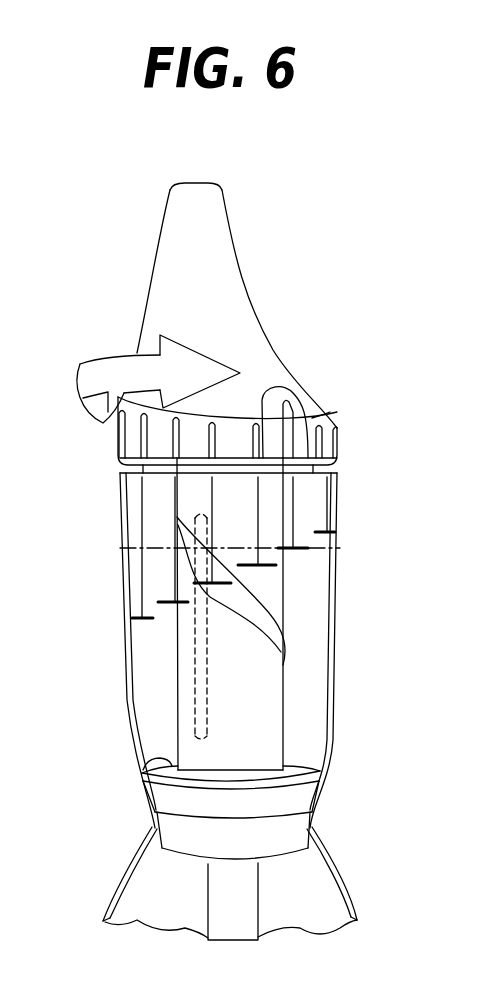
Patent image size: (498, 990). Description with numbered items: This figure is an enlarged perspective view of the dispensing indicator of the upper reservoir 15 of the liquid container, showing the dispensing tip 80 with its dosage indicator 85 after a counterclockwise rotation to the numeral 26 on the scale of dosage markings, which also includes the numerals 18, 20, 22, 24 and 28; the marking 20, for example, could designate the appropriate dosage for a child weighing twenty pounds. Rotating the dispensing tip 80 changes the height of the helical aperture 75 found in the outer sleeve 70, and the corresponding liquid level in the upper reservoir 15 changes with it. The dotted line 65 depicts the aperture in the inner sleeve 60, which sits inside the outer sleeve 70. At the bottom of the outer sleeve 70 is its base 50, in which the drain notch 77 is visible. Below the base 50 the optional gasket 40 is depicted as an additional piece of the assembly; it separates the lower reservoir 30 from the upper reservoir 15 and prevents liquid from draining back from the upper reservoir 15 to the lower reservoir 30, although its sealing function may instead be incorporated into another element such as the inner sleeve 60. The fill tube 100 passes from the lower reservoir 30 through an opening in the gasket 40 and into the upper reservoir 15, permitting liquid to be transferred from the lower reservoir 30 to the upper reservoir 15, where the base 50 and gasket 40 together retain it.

The upper reservoir 15 is at (340, 568).
The dose graduation 18 is at (143, 569).
The numeral 20 is at (173, 561).
The dose graduation 22 is at (212, 551).
The dose graduation 24 is at (257, 545).
The numeral 26 is at (294, 536).
The dose graduation 28 is at (327, 527).
The lower reservoir 30 is at (115, 882).
The gasket 40 is at (303, 798).
The base of the outer sleeve 50 is at (320, 775).
The inner sleeve 60 is at (255, 622).
The dotted line 65 is at (192, 713).
The outer sleeve 70 is at (283, 721).
The helical aperture 75 is at (185, 553).
The drain notch 77 is at (145, 762).
The dispensing tip 80 is at (148, 260).
The dosage indicator 85 is at (302, 410).
The fill tube 100 is at (260, 908).